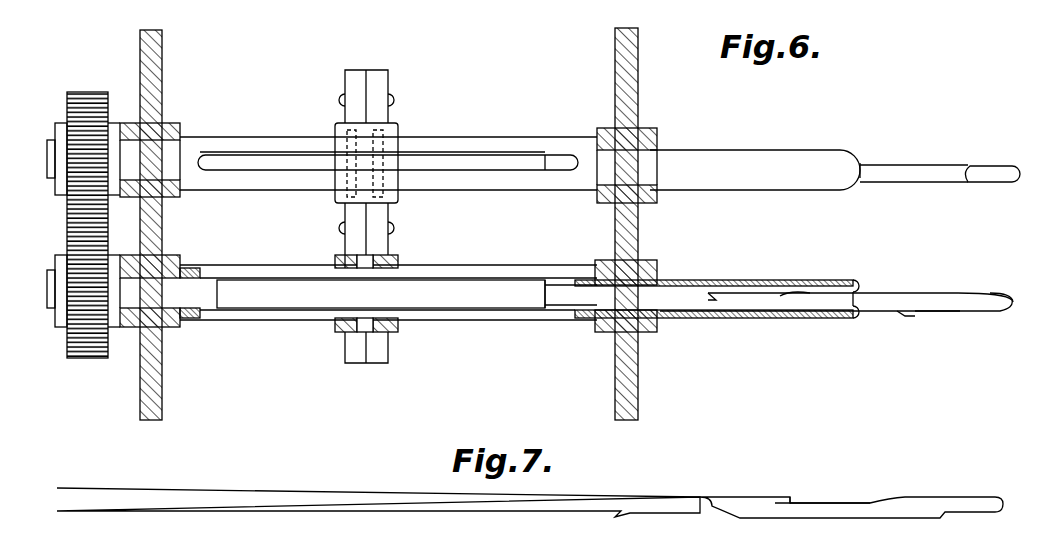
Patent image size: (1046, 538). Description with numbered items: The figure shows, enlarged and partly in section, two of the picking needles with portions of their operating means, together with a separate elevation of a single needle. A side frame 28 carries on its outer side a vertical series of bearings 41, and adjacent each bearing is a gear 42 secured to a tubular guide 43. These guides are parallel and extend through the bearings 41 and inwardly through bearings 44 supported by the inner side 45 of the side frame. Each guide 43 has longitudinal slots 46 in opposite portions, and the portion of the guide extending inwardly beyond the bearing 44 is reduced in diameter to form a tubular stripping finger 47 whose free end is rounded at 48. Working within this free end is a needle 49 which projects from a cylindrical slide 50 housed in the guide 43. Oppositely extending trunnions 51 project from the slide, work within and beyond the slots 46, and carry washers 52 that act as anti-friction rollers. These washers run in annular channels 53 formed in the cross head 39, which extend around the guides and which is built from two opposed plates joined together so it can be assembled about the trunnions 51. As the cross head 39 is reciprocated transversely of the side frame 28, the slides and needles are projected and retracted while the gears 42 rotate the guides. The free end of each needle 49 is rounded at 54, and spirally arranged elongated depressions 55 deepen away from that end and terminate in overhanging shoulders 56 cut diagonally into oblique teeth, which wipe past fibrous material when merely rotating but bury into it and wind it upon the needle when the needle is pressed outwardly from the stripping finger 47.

In FIG. 6, the side frame 28 is at (157, 406).
In FIG. 6, the cross head 39 is at (382, 229).
In FIG. 6, the bearing 41 is at (168, 125).
In FIG. 6, the gear 42 is at (81, 92).
In FIG. 6, the tubular guide 43 is at (243, 148).
In FIG. 6, the bearing 44 is at (649, 128).
In FIG. 6, the inner side of side frame 45 is at (615, 74).
In FIG. 6, the longitudinal slot 46 is at (446, 152).
In FIG. 6, the tubular stripping finger 47 is at (694, 150).
In FIG. 6, the rounded free end 48 is at (862, 158).
In FIG. 6, the needle 49 is at (873, 165).
In FIG. 7, the needle 49 is at (597, 497).
In FIG. 6, the cylindrical slide 50 is at (510, 165).
In FIG. 6, the trunnion 51 is at (379, 150).
In FIG. 6, the washer 52 is at (374, 152).
In FIG. 6, the annular channel 53 is at (351, 257).
In FIG. 6, the rounded end 54 is at (1003, 296).
In FIG. 6, the elongated depression 55 is at (931, 312).
In FIG. 7, the elongated depression 55 is at (826, 503).
In FIG. 6, the overhanging shoulder 56 is at (904, 164).
In FIG. 7, the overhanging shoulder 56 is at (786, 503).